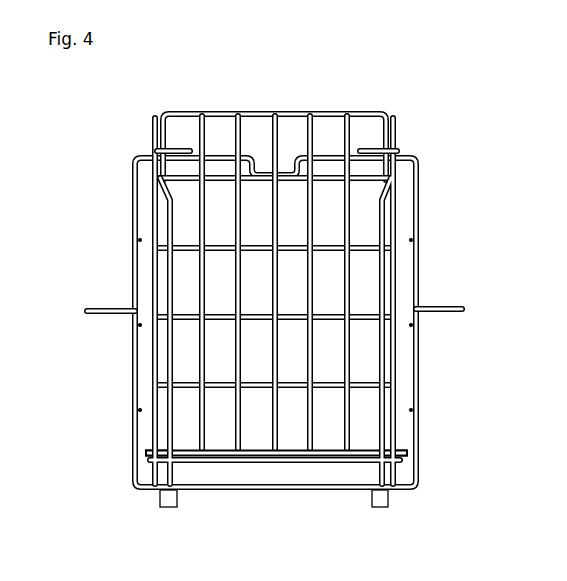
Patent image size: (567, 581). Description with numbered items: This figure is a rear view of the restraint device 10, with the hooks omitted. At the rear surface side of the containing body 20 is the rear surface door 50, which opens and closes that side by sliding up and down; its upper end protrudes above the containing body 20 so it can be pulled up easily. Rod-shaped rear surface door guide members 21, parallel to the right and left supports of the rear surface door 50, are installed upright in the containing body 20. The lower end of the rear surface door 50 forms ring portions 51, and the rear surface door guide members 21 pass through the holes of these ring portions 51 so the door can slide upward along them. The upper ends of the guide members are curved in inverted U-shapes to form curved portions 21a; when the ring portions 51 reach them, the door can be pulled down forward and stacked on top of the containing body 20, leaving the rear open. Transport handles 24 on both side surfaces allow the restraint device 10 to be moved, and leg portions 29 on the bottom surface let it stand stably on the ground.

The restraint device 10 is at (430, 76).
The containing body 20 is at (421, 204).
The rear surface door guide member 21 is at (133, 270).
The curved portion 21a is at (153, 129).
The transport handle 24 is at (87, 313).
The leg portion 29 is at (165, 508).
The rear surface door 50 is at (270, 112).
The ring portion 51 is at (148, 453).